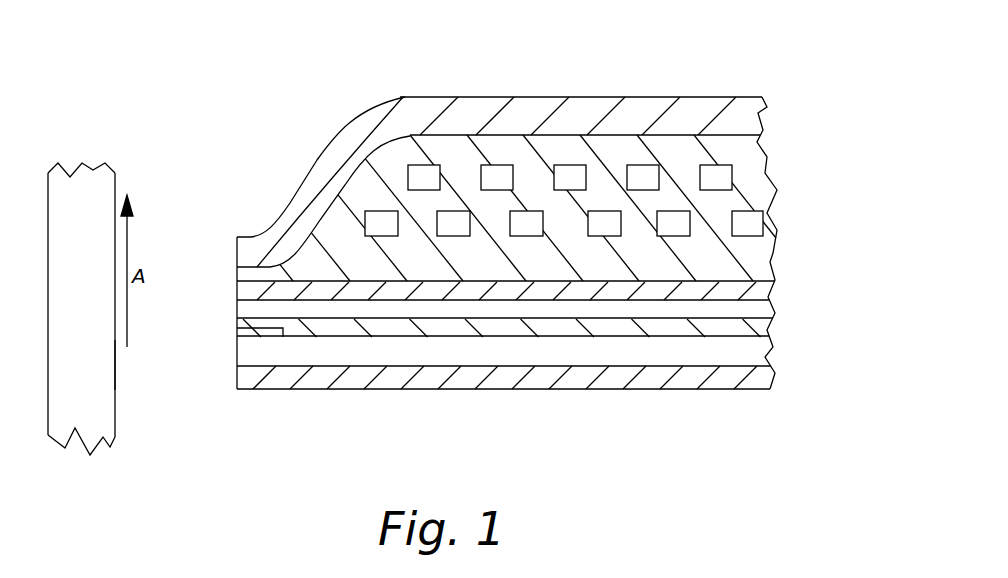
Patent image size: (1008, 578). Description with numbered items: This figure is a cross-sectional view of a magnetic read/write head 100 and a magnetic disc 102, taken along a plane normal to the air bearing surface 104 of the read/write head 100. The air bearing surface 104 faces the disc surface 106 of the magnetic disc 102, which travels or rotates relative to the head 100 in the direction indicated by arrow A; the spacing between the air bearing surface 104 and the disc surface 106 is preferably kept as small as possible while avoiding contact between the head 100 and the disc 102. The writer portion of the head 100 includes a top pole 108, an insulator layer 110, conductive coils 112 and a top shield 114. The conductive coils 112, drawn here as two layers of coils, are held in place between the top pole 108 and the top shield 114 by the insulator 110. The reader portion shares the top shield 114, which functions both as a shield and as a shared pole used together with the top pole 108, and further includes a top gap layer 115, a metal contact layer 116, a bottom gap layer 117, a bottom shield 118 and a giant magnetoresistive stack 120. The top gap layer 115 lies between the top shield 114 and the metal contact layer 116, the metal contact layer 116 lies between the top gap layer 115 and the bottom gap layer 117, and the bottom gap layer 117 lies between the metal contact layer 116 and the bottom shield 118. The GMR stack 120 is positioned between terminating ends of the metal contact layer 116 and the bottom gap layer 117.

The magnetic read/write head 100 is at (686, 66).
The magnetic disc 102 is at (104, 282).
The air bearing surface 104 is at (235, 250).
The disc surface 106 is at (116, 362).
The top pole 108 is at (733, 107).
The insulator layer 110 is at (720, 142).
The conductive coils 112 is at (670, 217).
The top shield 114 is at (772, 292).
The top gap layer 115 is at (767, 310).
The metal contact layer 116 is at (767, 332).
The bottom gap layer 117 is at (767, 350).
The bottom shield 118 is at (767, 377).
The giant magnetoresistive (GMR) stack 120 is at (241, 331).